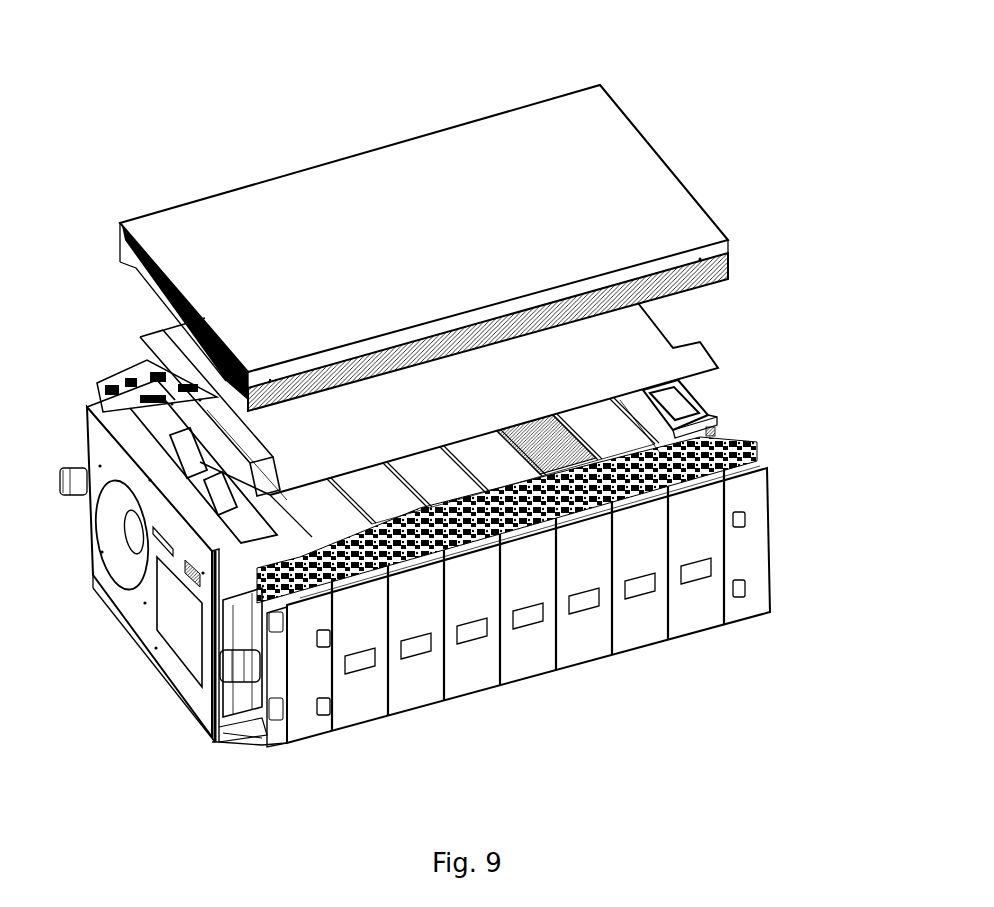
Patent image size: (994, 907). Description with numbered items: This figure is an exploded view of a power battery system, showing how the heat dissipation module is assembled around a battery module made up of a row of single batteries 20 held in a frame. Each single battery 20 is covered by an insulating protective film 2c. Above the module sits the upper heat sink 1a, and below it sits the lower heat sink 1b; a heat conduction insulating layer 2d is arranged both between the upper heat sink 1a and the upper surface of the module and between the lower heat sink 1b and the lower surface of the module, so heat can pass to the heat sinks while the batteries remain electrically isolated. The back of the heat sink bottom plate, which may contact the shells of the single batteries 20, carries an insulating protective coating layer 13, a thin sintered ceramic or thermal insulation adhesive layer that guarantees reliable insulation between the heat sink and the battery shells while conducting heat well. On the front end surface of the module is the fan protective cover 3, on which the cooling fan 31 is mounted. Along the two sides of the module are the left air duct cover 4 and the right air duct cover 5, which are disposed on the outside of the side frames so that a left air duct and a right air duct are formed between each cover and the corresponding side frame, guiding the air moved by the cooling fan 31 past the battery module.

The upper heat sink 1a is at (597, 143).
The insulating protective coating layer 13 is at (728, 264).
The heat conduction insulating layer 2d is at (630, 357).
The insulating protective film 2c is at (530, 437).
The single battery 20 is at (690, 427).
The left air duct cover 4 is at (138, 355).
The cooling fan 31 is at (140, 533).
The fan protective cover 3 is at (178, 610).
The right air duct cover 5 is at (520, 655).
The lower heat sink 1b is at (258, 738).